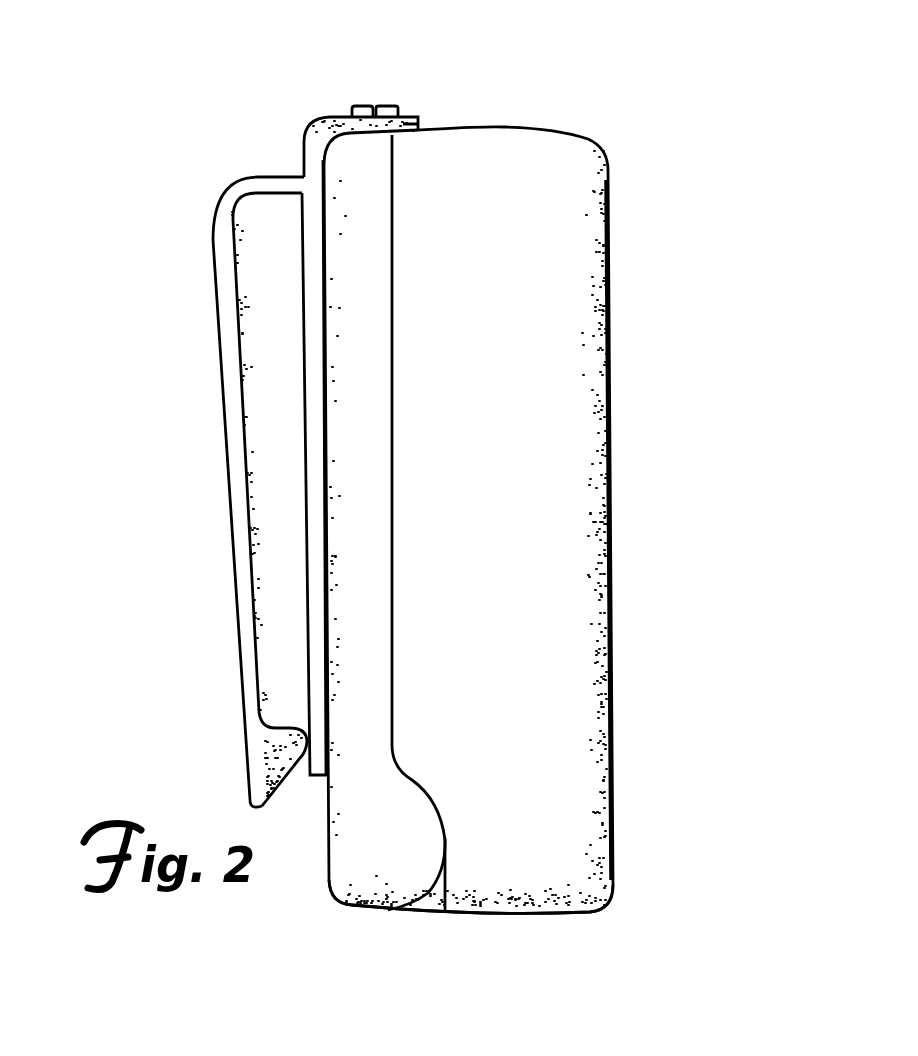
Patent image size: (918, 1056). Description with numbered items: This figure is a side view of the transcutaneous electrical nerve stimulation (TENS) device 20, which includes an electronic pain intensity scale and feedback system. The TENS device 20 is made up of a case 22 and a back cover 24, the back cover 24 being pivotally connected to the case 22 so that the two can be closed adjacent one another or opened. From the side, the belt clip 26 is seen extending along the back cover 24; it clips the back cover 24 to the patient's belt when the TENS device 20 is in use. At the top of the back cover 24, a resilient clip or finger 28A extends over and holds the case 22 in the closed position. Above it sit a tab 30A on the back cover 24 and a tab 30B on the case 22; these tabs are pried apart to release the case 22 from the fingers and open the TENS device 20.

The TENS device 20 is at (168, 203).
The case 22 is at (612, 151).
The back cover 24 is at (326, 903).
The belt clip 26 is at (230, 508).
The resilient clip or finger 28A is at (418, 118).
The tab 30A is at (364, 105).
The tab 30B is at (390, 106).